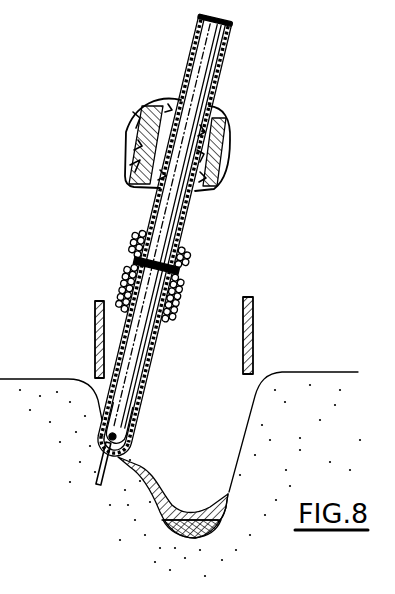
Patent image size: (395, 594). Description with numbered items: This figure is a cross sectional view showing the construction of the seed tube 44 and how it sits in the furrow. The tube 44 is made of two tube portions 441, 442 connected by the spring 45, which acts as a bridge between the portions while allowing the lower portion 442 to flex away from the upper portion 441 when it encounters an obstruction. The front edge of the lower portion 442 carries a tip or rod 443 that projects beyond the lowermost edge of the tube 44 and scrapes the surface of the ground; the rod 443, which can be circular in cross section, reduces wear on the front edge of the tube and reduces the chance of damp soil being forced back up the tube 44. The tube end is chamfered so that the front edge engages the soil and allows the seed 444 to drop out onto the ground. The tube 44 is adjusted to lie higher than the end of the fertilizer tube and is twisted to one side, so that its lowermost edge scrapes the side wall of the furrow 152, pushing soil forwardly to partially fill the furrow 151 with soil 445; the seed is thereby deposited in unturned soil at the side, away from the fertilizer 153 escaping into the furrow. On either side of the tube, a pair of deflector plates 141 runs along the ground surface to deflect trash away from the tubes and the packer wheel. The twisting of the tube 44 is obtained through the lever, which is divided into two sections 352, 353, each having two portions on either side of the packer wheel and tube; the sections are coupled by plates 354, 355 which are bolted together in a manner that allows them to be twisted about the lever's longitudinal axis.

The tube 44 is at (228, 66).
The tube portion 441 is at (229, 27).
The tube portion 442 is at (158, 326).
The tip or rod 443 is at (101, 481).
The seed 444 is at (100, 455).
The soil 445 is at (164, 484).
The spring 45 is at (178, 264).
The deflector plates 141 is at (95, 314).
The furrow 151 is at (196, 538).
The side wall of the furrow 152 is at (94, 415).
The fertilizer 153 is at (226, 510).
The lever section 352 is at (125, 134).
The lever section 353 is at (229, 127).
The plate 354 is at (133, 152).
The plate 355 is at (229, 158).